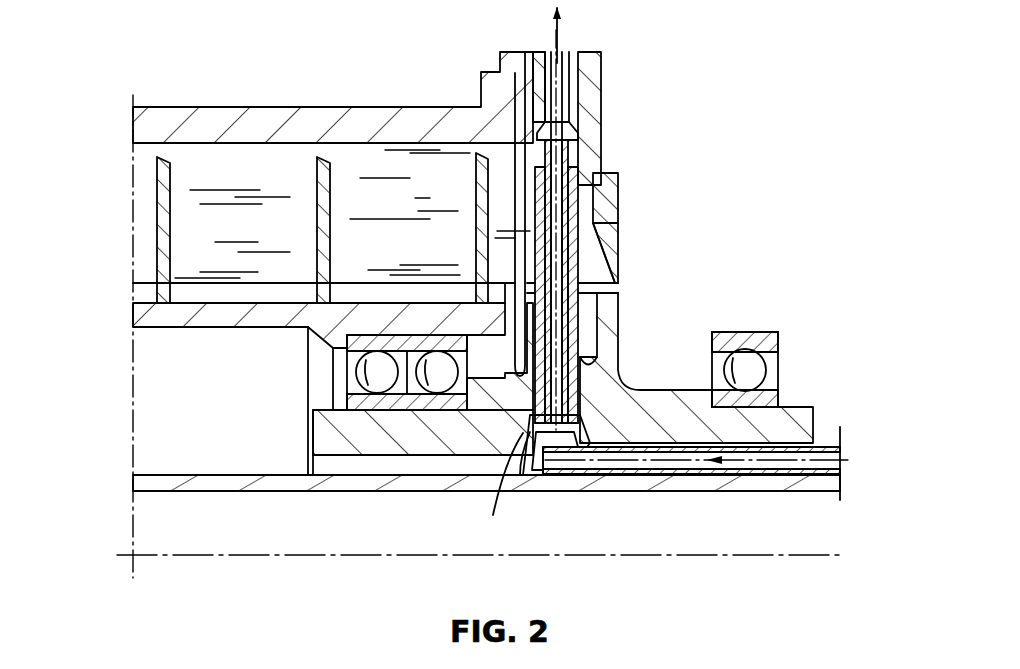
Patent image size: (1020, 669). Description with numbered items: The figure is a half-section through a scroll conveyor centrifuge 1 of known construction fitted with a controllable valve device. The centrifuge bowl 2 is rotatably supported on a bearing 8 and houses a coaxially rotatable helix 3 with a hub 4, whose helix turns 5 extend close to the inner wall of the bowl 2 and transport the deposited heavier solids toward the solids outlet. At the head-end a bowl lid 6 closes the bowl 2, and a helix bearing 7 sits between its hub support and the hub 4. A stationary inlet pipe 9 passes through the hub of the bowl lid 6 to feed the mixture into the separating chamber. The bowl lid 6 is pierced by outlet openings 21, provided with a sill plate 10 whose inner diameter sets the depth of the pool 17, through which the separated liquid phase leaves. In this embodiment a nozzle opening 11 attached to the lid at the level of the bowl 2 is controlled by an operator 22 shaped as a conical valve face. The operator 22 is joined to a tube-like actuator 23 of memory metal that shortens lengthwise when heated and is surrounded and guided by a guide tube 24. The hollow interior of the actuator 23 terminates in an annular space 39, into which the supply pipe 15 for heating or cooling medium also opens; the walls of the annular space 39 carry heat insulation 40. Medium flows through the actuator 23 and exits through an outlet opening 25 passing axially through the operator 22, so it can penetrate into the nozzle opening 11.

The scroll conveyor centrifuge 1 is at (712, 206).
The centrifuge bowl 2 is at (362, 120).
The helix 3 is at (152, 214).
The hub 4 is at (147, 318).
The helix turns 5 is at (162, 260).
The bowl lid 6 is at (323, 433).
The helix bearing 7 is at (353, 392).
The bearing 8 is at (765, 342).
The stationary inlet pipe 9 is at (820, 483).
The sill plate 10 is at (612, 226).
The nozzle opening 11 is at (563, 62).
The supply pipe 15 is at (822, 452).
The pool 17 is at (412, 212).
The outlet openings 21 is at (590, 202).
The operator 22 is at (568, 132).
The tube-like actuator 23 is at (568, 296).
The guide tube 24 is at (575, 258).
The outlet opening 25 is at (556, 125).
The annular space 39 is at (535, 450).
The heat insulation 40 is at (523, 433).